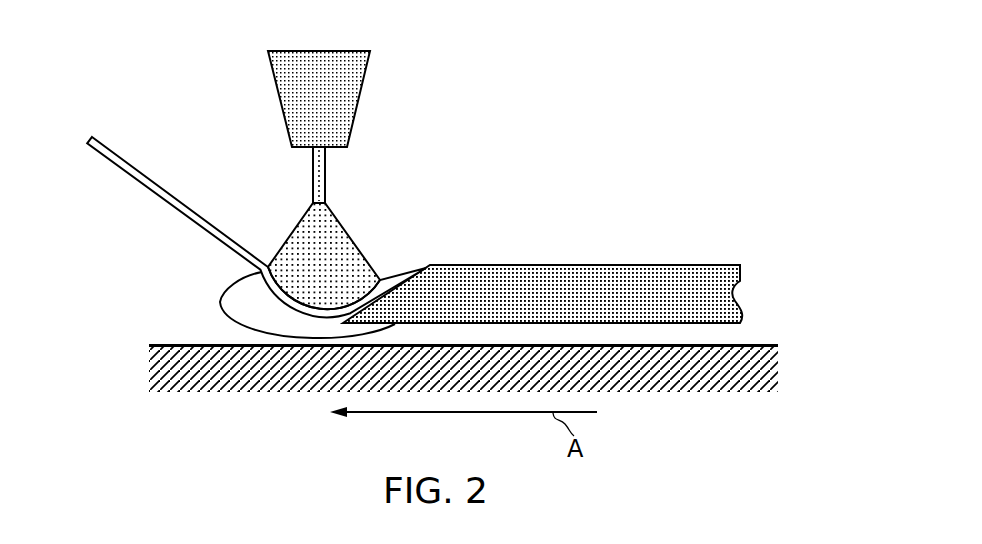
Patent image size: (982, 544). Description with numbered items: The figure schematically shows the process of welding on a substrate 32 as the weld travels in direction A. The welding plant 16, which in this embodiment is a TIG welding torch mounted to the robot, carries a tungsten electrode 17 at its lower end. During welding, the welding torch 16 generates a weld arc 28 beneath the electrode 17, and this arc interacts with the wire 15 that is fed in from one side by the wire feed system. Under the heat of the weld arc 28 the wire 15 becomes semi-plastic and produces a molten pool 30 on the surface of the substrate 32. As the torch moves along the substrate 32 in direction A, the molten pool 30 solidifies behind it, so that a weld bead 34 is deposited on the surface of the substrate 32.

The wire 15 is at (127, 188).
The welding plant 16 is at (375, 93).
The tungsten electrode 17 is at (340, 178).
The weld arc 28 is at (367, 241).
The molten pool 30 is at (206, 302).
The substrate 32 is at (778, 346).
The weld bead 34 is at (629, 260).